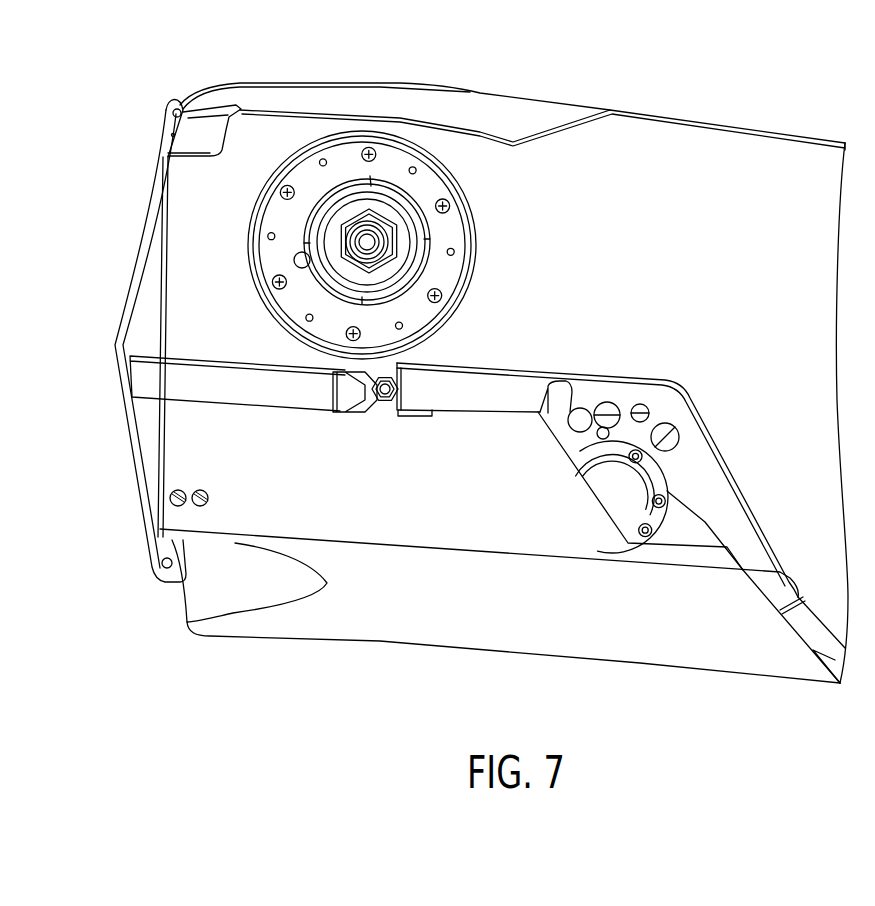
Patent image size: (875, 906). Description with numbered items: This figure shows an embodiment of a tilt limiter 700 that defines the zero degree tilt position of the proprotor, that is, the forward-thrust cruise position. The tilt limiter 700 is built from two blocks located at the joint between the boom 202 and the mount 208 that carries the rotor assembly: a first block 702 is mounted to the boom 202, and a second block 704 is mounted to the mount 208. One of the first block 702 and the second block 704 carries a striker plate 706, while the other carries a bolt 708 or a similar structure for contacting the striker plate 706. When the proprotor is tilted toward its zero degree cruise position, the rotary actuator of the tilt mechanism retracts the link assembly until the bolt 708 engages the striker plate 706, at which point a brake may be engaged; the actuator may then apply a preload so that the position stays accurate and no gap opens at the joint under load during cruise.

The boom 202 is at (777, 131).
The mount 208 is at (373, 97).
The tilt limiter 700 is at (358, 421).
The first block 702 is at (477, 367).
The second block 704 is at (183, 400).
The striker plate 706 is at (345, 393).
The bolt 708 is at (397, 383).